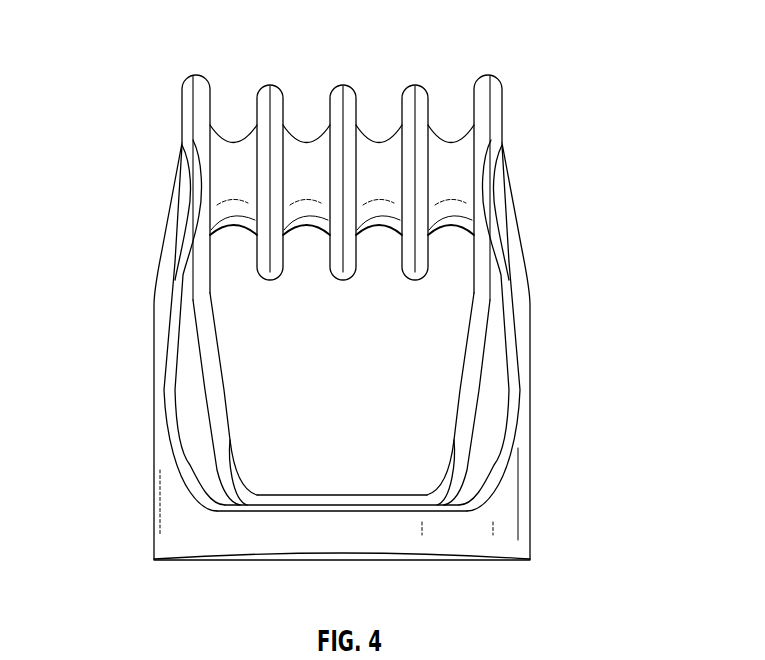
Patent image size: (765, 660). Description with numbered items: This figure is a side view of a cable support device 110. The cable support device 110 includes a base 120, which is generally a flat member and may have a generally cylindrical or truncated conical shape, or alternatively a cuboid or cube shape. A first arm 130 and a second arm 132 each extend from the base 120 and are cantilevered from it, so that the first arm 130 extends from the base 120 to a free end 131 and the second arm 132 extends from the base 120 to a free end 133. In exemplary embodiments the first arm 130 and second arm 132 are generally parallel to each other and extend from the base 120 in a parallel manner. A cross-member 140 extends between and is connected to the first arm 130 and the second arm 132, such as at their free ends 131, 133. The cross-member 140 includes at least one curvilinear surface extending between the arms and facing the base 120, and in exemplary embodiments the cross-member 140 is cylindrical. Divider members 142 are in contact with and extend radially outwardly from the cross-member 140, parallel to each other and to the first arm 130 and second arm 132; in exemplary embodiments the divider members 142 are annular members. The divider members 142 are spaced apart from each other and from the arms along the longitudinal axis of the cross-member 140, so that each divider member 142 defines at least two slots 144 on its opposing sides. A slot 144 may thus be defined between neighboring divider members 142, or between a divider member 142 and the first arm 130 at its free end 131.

The cable support device 110 is at (593, 87).
The base 120 is at (242, 545).
The first arm 130 is at (548, 393).
The free end 131 is at (530, 172).
The second arm 132 is at (110, 345).
The free end 133 is at (137, 130).
The cross-member 140 is at (372, 153).
The divider member 142 is at (275, 72).
The slot 144 is at (232, 283).